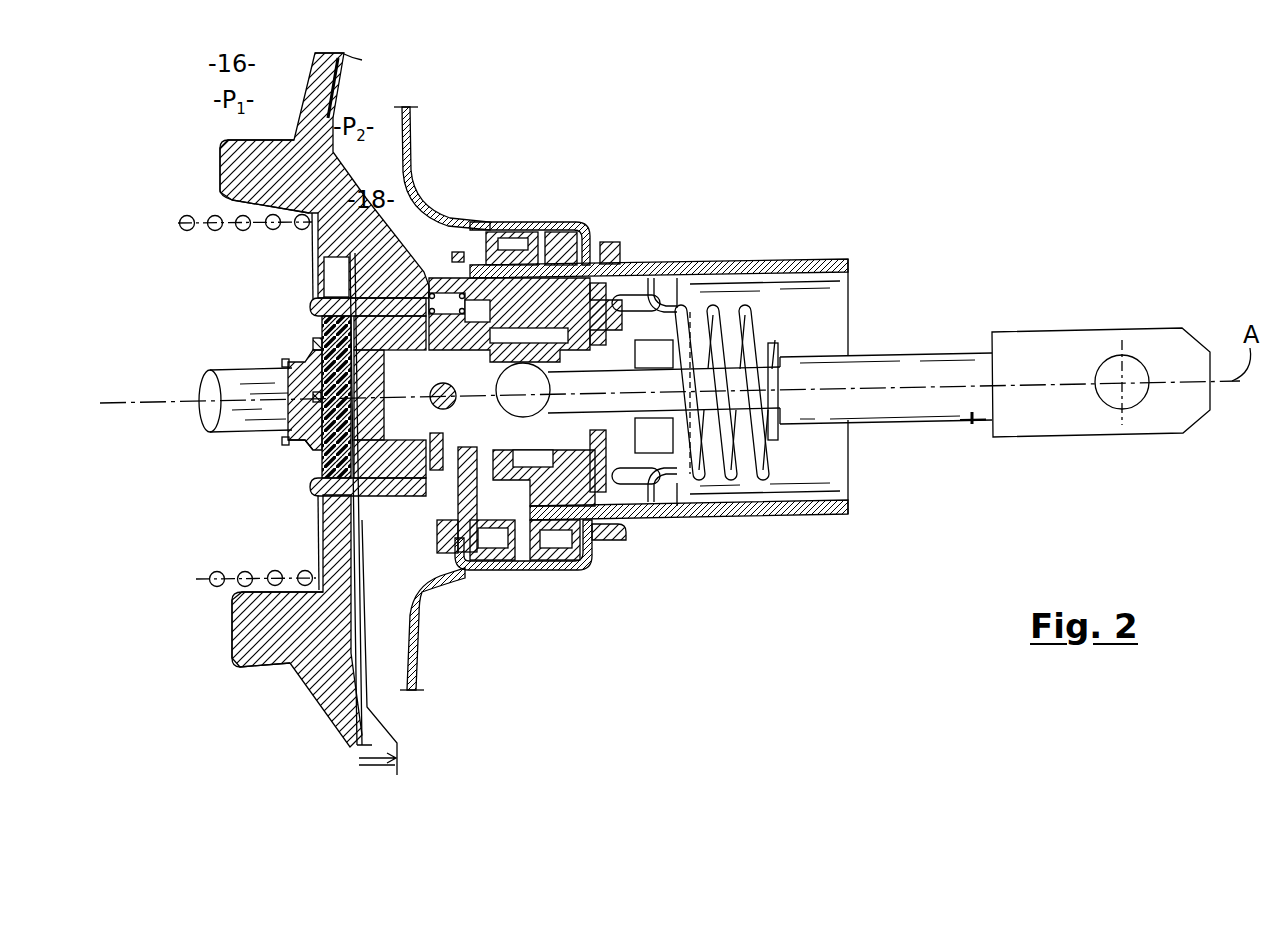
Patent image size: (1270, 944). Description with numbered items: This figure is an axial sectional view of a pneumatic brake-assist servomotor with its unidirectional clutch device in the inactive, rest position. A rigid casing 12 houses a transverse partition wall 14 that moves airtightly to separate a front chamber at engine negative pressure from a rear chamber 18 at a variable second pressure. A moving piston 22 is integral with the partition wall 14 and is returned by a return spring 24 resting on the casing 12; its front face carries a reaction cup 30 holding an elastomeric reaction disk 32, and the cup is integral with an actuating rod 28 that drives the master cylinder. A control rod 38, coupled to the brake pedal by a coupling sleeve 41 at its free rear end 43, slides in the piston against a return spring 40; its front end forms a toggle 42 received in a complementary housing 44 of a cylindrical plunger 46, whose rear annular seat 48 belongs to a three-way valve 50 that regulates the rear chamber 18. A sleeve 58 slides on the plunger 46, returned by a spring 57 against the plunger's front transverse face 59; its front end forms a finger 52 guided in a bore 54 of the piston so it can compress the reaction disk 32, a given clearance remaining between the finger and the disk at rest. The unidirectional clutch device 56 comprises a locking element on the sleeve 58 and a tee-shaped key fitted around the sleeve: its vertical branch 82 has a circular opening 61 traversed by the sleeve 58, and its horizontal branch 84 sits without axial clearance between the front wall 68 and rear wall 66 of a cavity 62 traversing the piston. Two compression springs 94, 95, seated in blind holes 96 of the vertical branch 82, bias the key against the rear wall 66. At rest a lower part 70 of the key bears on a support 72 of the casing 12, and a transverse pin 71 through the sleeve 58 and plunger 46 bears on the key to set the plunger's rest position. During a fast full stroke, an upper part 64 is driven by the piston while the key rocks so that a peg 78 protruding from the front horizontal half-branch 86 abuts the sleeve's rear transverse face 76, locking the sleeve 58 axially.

The rigid casing 12 is at (420, 107).
The transverse partition wall 14 is at (332, 98).
The rear chamber 18 is at (324, 321).
The moving piston 22 is at (222, 168).
The return spring 24 is at (210, 226).
The actuating rod 28 is at (204, 386).
The reaction cup 30 is at (322, 305).
The reaction disk 32 is at (316, 312).
The control rod 38 is at (972, 418).
The return spring 40 is at (735, 462).
The coupling sleeve 41 is at (1092, 335).
The toggle 42 is at (556, 384).
The free rear end 43 is at (958, 365).
The housing 44 is at (603, 357).
The plunger 46 is at (593, 525).
The rear annular seat 48 is at (600, 440).
The three-way valve 50 is at (653, 518).
The finger 52 is at (312, 440).
The bore 54 is at (286, 360).
The unidirectional clutch device 56 is at (464, 280).
The spring 57 is at (322, 343).
The sleeve 58 is at (356, 500).
The front transverse face 59 is at (322, 484).
The circular opening 61 is at (580, 570).
The cavity 62 is at (405, 535).
The upper part 64 is at (470, 300).
The rear wall 66 is at (492, 335).
The front wall 68 is at (428, 292).
The lower part 70 is at (475, 550).
The transverse pin 71 is at (556, 412).
The support 72 is at (518, 568).
The rear transverse face 76 is at (325, 397).
The peg 78 is at (346, 290).
The vertical branch 82 is at (440, 580).
The horizontal branch 84 is at (520, 242).
The front horizontal half-branch 86 is at (350, 273).
The compression spring 94 is at (437, 287).
The compression spring 95 is at (438, 522).
The blind holes 96 is at (458, 258).